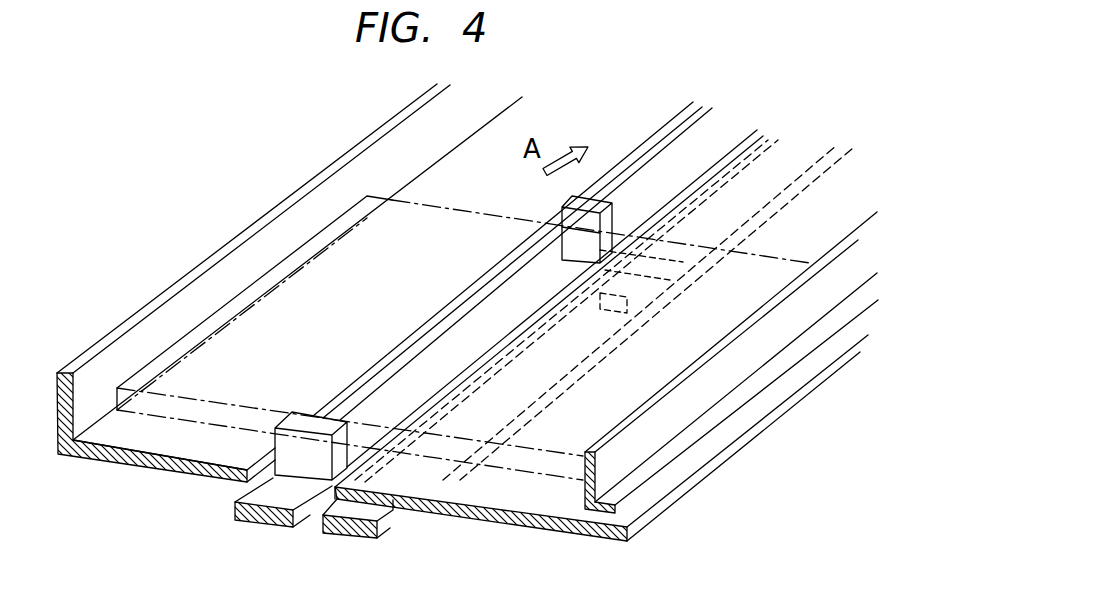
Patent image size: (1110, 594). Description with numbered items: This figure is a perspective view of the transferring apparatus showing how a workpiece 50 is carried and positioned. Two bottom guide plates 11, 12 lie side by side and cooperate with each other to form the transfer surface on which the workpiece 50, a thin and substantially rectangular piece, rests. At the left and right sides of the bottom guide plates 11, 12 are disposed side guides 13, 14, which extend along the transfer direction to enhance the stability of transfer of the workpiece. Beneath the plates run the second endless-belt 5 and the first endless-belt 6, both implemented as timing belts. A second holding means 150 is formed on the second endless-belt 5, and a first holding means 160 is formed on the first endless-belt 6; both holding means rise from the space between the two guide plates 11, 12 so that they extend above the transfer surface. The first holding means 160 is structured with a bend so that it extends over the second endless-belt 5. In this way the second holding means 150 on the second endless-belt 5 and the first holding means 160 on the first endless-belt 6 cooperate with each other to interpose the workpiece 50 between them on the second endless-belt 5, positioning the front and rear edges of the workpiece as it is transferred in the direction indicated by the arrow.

The second endless-belt 5 is at (280, 493).
The first endless-belt 6 is at (365, 512).
The bottom guide plate 11 is at (177, 448).
The bottom guide plate 12 is at (527, 497).
The side guide 13 is at (137, 322).
The side guide 14 is at (703, 360).
The workpiece 50 is at (422, 205).
The second holding means 150 is at (297, 448).
The first holding means 160 is at (614, 217).